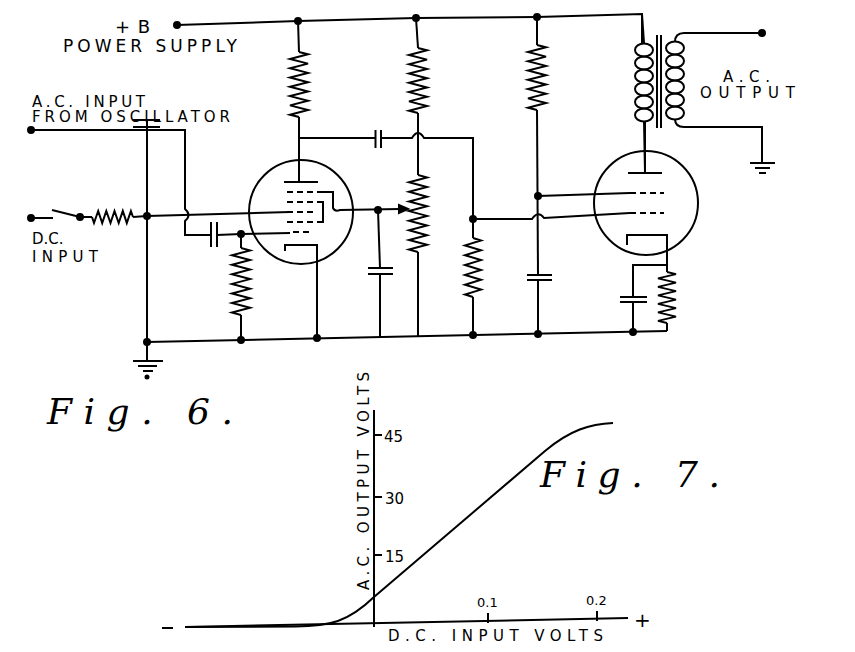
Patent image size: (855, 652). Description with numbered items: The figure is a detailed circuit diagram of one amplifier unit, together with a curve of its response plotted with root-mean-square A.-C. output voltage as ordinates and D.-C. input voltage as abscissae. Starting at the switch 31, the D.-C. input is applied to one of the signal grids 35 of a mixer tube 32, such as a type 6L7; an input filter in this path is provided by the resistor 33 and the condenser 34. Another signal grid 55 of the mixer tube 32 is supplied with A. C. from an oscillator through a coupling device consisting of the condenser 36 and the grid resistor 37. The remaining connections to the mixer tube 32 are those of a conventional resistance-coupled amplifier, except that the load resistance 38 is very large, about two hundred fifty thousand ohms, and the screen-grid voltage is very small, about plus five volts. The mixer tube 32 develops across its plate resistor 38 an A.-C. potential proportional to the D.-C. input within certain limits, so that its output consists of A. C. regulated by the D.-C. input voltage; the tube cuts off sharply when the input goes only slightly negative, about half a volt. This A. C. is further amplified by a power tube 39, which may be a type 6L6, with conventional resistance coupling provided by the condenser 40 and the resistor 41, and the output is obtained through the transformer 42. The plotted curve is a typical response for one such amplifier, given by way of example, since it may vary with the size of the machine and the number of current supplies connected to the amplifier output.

The switch 31 is at (63, 207).
The mixer tube 32 is at (262, 184).
The resistor 33 is at (117, 209).
The condenser 34 is at (133, 291).
The signal grid 35 is at (290, 211).
The condenser 36 is at (212, 250).
The grid resistor 37 is at (253, 283).
The load resistance 38 is at (290, 83).
The power tube 39 is at (603, 174).
The condenser 40 is at (377, 123).
The resistor 41 is at (483, 267).
The transformer 42 is at (638, 80).
The signal grid 55 is at (313, 232).